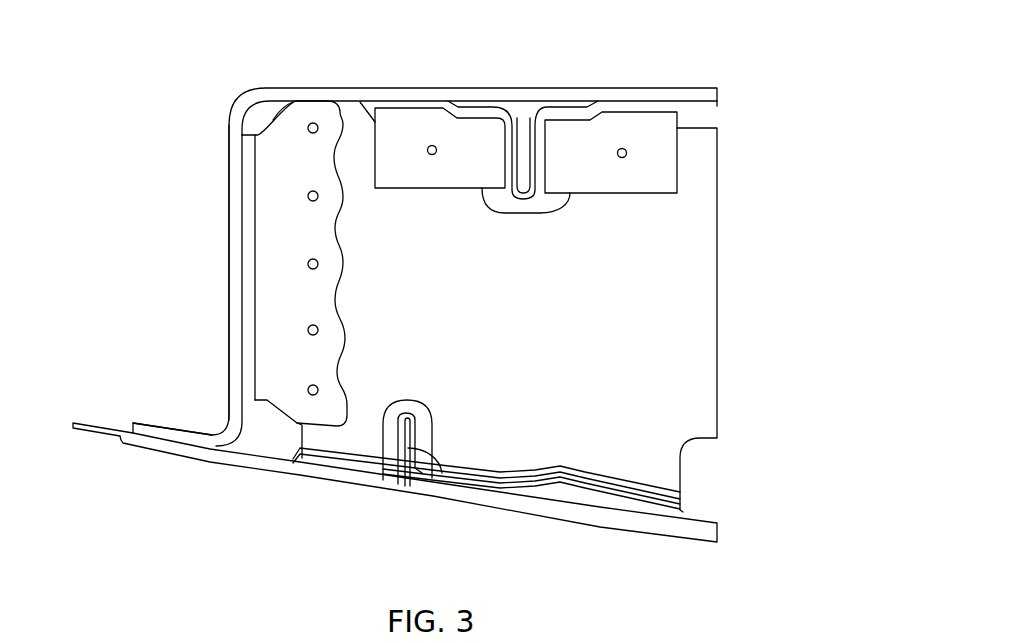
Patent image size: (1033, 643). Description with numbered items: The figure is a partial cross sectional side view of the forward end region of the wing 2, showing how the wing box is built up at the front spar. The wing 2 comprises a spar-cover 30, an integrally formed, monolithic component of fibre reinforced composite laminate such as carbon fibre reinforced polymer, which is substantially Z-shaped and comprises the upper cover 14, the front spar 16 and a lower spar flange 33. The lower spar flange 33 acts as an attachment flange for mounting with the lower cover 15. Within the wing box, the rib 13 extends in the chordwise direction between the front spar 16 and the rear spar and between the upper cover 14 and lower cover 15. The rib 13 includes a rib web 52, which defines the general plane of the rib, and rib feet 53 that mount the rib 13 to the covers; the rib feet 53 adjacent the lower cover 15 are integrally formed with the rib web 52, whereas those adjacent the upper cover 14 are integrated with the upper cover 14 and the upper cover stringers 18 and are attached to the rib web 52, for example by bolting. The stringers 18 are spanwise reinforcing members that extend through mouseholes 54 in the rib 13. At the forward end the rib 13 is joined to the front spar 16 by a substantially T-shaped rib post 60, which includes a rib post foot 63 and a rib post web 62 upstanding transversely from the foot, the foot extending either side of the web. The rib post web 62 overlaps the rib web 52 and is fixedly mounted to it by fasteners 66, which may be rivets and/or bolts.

The wing 2 is at (779, 70).
The rib 13 is at (697, 177).
The upper cover 14 is at (577, 97).
The lower cover 15 is at (552, 508).
The front spar 16 is at (233, 233).
The stringers 18 is at (523, 147).
The spar-cover 30 is at (487, 95).
The lower spar flange 33 is at (178, 440).
The rib web 52 is at (502, 340).
The rib feet 53 is at (435, 175).
The mouseholes 54 is at (528, 208).
The rib post 60 is at (265, 170).
The rib post web 62 is at (270, 299).
The rib post foot 63 is at (255, 270).
The fasteners 66 is at (308, 330).